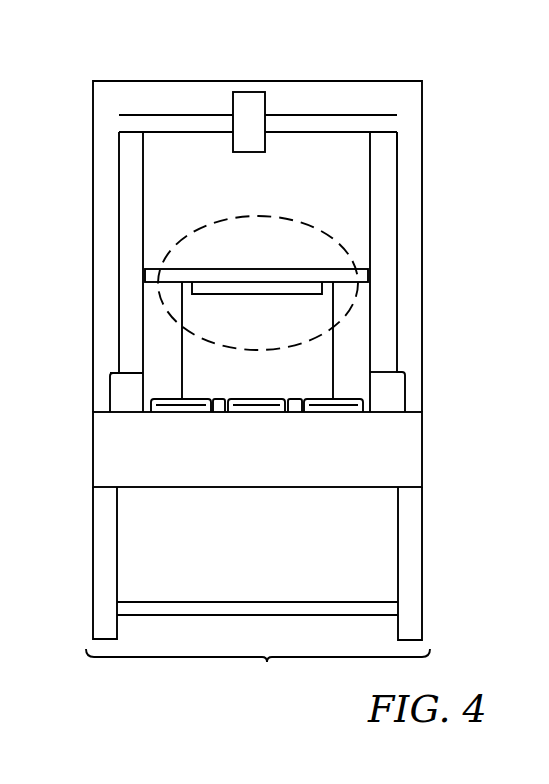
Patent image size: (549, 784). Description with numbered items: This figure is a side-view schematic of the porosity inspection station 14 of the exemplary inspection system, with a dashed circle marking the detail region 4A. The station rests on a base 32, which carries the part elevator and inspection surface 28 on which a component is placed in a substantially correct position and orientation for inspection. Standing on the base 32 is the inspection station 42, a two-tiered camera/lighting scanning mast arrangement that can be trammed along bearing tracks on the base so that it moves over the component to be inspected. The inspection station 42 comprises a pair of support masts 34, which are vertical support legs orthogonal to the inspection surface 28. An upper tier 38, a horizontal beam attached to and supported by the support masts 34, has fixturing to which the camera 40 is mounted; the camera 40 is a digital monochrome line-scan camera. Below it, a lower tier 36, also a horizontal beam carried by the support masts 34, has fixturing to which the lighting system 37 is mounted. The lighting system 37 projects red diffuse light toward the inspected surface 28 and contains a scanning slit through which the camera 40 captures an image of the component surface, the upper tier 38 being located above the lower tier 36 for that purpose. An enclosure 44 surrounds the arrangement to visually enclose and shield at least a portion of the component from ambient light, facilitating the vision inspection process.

The porosity inspection station 14 is at (267, 660).
The part elevator and inspection surface 28 is at (296, 409).
The base 32 is at (110, 451).
The support masts 34 is at (118, 222).
The lower tier 36 is at (307, 268).
The lighting system 37 is at (277, 295).
The upper tier 38 is at (307, 115).
The camera 40 is at (248, 92).
The inspection station 42 is at (387, 147).
The enclosure 44 is at (140, 80).
The detail area 4A is at (317, 222).